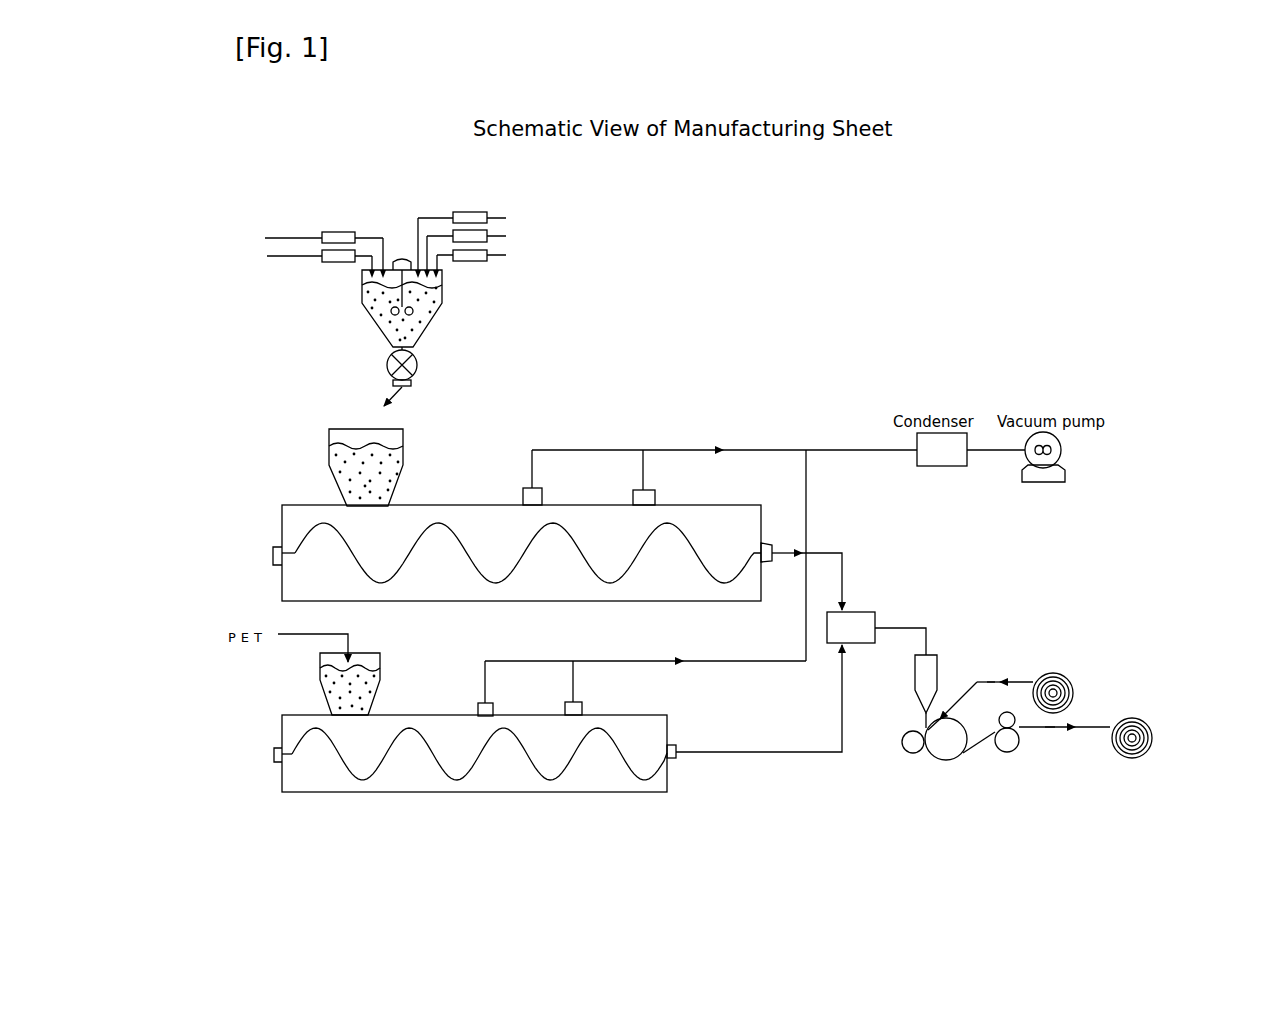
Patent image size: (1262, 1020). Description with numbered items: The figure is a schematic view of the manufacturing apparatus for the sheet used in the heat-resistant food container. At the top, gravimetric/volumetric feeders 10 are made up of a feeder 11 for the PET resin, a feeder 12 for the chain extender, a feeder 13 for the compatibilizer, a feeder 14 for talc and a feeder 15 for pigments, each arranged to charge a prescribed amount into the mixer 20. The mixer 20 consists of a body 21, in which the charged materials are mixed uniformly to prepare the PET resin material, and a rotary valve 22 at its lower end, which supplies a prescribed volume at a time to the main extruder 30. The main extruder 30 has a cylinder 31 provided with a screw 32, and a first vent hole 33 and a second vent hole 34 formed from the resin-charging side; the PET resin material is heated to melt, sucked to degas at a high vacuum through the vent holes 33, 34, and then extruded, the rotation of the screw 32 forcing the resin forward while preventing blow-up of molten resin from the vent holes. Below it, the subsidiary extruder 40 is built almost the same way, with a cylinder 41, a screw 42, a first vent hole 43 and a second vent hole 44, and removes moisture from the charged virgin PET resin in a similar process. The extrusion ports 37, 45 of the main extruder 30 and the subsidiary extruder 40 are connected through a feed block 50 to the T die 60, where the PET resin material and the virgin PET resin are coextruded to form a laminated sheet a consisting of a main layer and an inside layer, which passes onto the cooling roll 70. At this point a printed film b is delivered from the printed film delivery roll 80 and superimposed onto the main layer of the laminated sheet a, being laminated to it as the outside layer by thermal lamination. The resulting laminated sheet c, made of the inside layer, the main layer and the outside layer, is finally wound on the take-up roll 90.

The gravimetric/volumetric feeders 10 is at (382, 210).
The feeder for the PET resin 11 is at (467, 220).
The feeder for the chain extender 12 is at (480, 237).
The feeder for the compatibilizer 13 is at (470, 260).
The feeder for talc 14 is at (337, 236).
The feeder for pigments 15 is at (338, 262).
The mixer 20 is at (359, 327).
The body 21 is at (430, 313).
The rotary valve 22 is at (417, 370).
The main extruder 30 is at (282, 524).
The cylinder 31 is at (282, 585).
The screw 32 is at (310, 533).
The first vent hole 33 is at (525, 496).
The second vent hole 34 is at (650, 490).
The extrusion port 37 is at (772, 543).
The subsidiary extruder 40 is at (282, 775).
The cylinder 41 is at (337, 793).
The screw 42 is at (307, 737).
The first vent hole 43 is at (478, 707).
The second vent hole 44 is at (577, 707).
The extrusion port 45 is at (672, 759).
The feed block 50 is at (857, 616).
The T die 60 is at (928, 668).
The cooling roll 70 is at (930, 758).
The printed film delivery roll 80 is at (1082, 680).
The take-up roll 90 is at (1156, 720).
The laminated sheet a is at (920, 718).
The printed film b is at (987, 682).
The laminated sheet c is at (1050, 728).